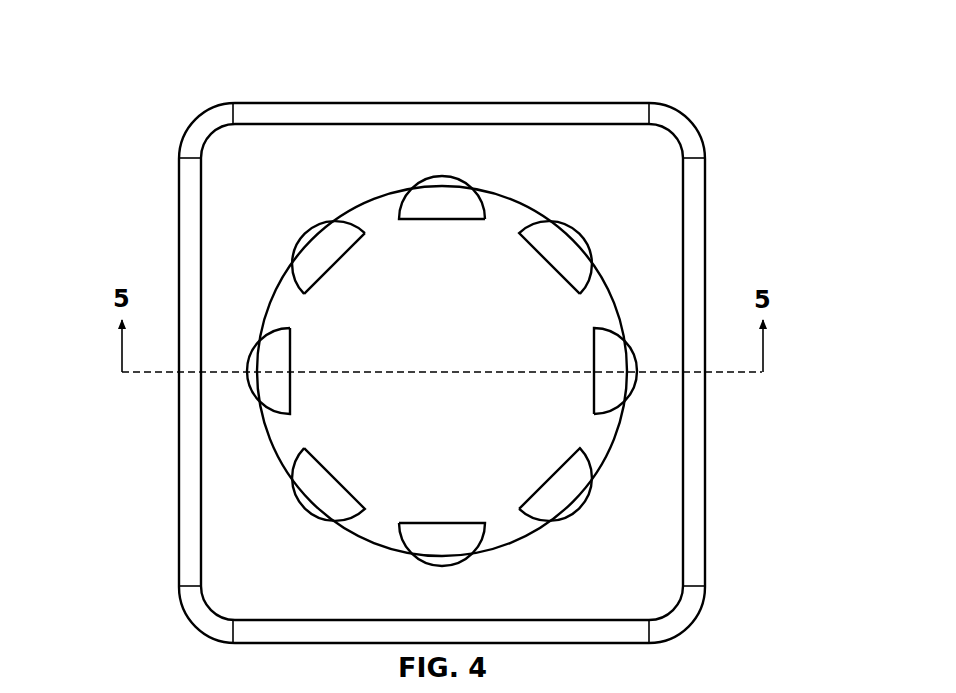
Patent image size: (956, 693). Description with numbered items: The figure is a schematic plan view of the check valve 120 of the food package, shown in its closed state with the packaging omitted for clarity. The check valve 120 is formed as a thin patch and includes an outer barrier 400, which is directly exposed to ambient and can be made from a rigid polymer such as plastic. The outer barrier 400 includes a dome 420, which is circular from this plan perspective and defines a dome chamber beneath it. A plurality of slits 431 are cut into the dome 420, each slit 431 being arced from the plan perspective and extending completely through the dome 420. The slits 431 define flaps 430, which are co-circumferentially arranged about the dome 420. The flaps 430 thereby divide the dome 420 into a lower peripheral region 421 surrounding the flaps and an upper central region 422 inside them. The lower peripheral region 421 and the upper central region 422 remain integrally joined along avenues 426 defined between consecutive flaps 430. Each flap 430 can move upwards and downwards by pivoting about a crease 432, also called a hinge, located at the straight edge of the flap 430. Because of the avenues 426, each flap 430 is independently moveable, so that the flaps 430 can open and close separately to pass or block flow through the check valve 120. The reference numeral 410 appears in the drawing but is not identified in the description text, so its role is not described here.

The check valve 120 is at (440, 323).
The outer barrier 400 is at (440, 323).
The housing 410 is at (567, 168).
The dome 420 is at (421, 295).
The lower peripheral region 421 is at (316, 245).
The upper central region 422 is at (471, 410).
The avenues 426 is at (562, 327).
The flaps 430 is at (560, 262).
The slits 431 is at (365, 294).
The crease 432 is at (317, 277).